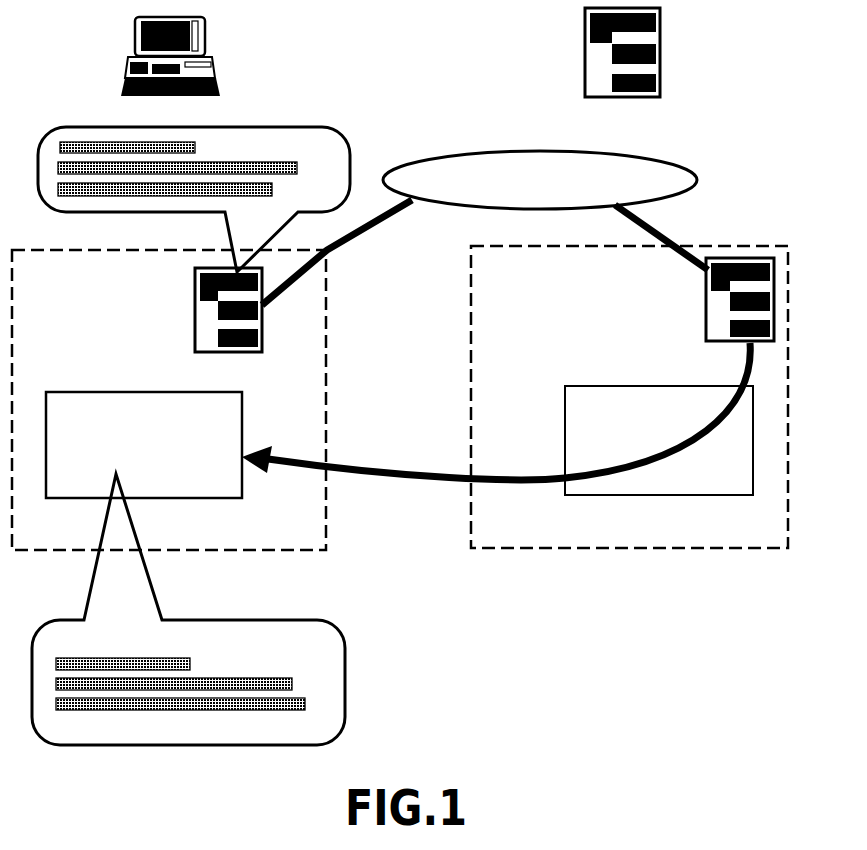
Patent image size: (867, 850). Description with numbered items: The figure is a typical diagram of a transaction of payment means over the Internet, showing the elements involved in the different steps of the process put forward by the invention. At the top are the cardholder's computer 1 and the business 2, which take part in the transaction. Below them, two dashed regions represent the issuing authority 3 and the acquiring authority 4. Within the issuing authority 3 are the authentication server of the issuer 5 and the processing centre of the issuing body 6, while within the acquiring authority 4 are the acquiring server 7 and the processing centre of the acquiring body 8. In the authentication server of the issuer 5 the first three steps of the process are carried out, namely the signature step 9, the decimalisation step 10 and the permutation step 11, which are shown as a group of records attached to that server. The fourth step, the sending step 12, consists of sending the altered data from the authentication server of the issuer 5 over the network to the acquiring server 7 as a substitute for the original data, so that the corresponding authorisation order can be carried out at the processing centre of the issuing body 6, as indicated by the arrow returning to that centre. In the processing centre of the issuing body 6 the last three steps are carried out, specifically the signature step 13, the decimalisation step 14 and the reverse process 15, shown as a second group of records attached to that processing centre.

The cardholder's computer 1 is at (214, 35).
The business 2 is at (672, 42).
The issuing authority 3 is at (327, 372).
The acquiring authority 4 is at (548, 550).
The authentication server of the issuer 5 is at (262, 336).
The processing centre of the issuing body 6 is at (242, 430).
The acquiring server 7 is at (748, 265).
The processing centre of the acquiring body 8 is at (694, 497).
The signature step 9 is at (197, 147).
The decimalisation step 10 is at (73, 168).
The permutation step 11 is at (267, 185).
The sending step 12 is at (640, 178).
The signature step 13 is at (188, 660).
The decimalisation step 14 is at (297, 678).
The reverse process step 15 is at (306, 700).